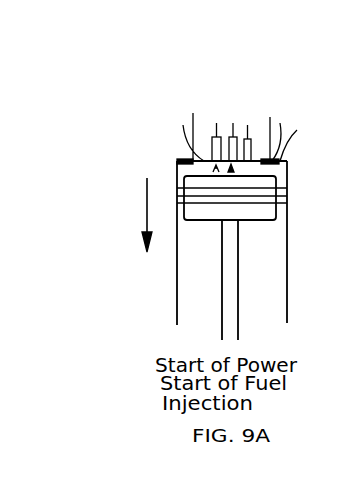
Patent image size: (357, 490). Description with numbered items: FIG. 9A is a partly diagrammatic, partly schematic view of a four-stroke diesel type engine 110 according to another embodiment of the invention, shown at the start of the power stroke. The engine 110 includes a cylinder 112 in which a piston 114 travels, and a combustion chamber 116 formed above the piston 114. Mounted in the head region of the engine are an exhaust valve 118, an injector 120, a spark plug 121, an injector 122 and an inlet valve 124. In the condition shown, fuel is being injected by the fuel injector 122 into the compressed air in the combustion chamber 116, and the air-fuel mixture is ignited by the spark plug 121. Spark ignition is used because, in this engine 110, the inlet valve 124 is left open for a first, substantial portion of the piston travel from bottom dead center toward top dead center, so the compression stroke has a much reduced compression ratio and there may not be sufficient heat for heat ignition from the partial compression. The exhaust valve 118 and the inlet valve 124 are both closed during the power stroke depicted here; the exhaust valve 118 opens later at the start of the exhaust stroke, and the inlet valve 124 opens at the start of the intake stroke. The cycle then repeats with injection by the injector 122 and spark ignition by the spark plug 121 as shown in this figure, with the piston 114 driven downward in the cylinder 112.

The four-stroke diesel type engine 110 is at (152, 125).
The cylinder 112 is at (291, 247).
The piston 114 is at (268, 208).
The combustion chamber 116 is at (270, 170).
The exhaust valve 118 is at (283, 155).
The injector 120 is at (255, 160).
The spark plug 121 is at (236, 122).
The injector 122 is at (200, 146).
The inlet valve 124 is at (195, 160).